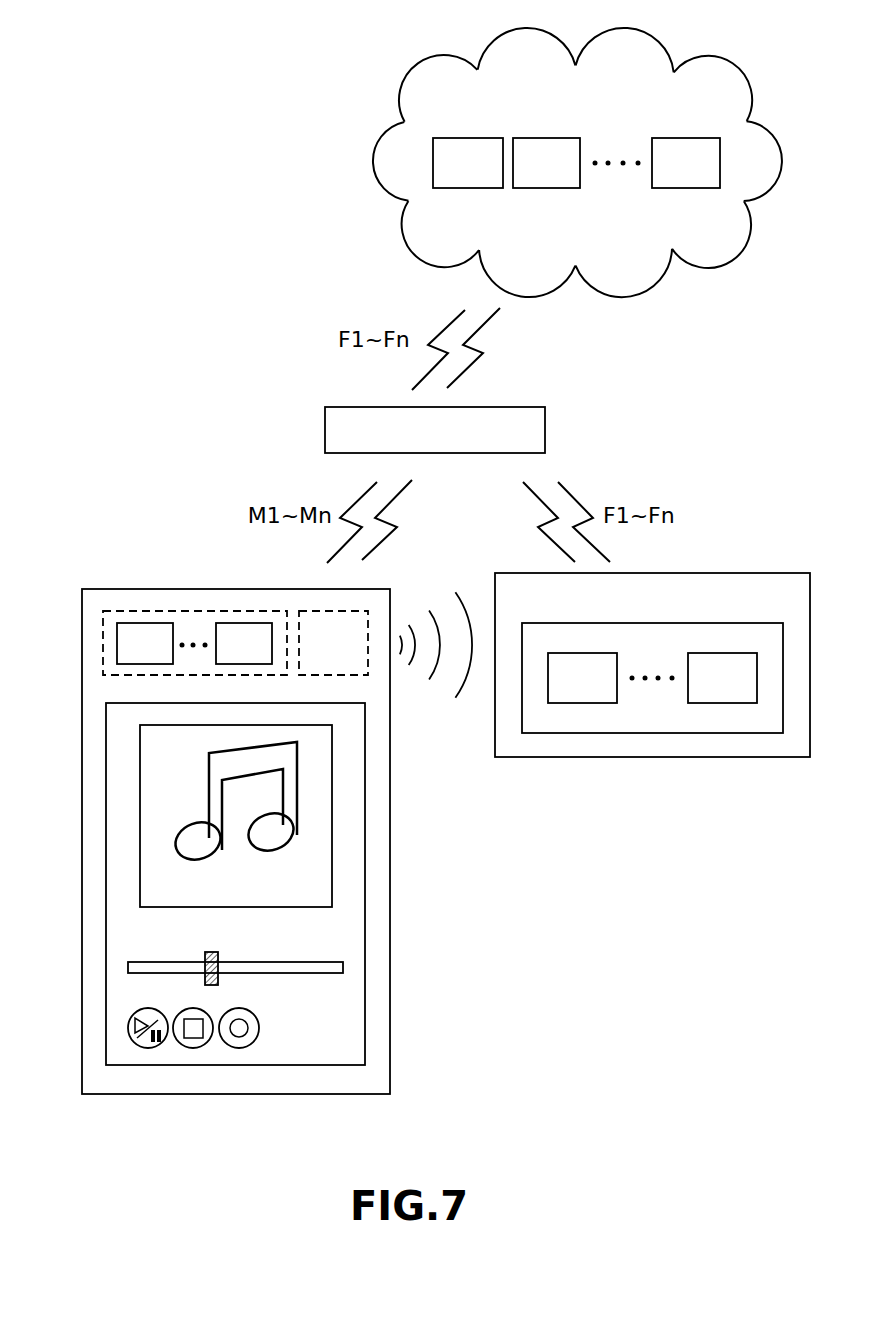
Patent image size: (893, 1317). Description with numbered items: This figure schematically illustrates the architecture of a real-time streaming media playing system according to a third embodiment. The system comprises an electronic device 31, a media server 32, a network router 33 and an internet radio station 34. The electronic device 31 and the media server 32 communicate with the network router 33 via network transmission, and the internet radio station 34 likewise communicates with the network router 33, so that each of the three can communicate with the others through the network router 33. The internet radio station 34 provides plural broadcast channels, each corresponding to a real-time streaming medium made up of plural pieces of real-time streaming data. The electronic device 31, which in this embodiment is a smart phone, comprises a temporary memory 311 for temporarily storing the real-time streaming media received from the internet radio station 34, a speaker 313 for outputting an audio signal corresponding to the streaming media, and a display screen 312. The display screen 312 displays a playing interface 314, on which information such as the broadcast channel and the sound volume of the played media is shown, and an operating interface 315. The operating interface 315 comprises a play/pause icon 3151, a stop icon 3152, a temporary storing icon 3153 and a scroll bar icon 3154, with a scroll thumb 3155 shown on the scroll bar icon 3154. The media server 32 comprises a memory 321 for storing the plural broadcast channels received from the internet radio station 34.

The internet radio station 34 is at (638, 50).
The network router 33 is at (492, 417).
The media server 32 is at (652, 647).
The memory 321 is at (670, 635).
The electronic device 31 is at (237, 849).
The temporary memory 311 is at (143, 620).
The speaker 313 is at (333, 620).
The display screen 312 is at (228, 922).
The playing interface 314 is at (317, 823).
The operating interface 315 is at (211, 1033).
The play/pause icon 3151 is at (132, 1020).
The stop icon 3152 is at (182, 1045).
The temporary storing icon 3153 is at (315, 1008).
The scroll bar icon 3154 is at (260, 968).
The scroll thumb 3155 is at (207, 952).